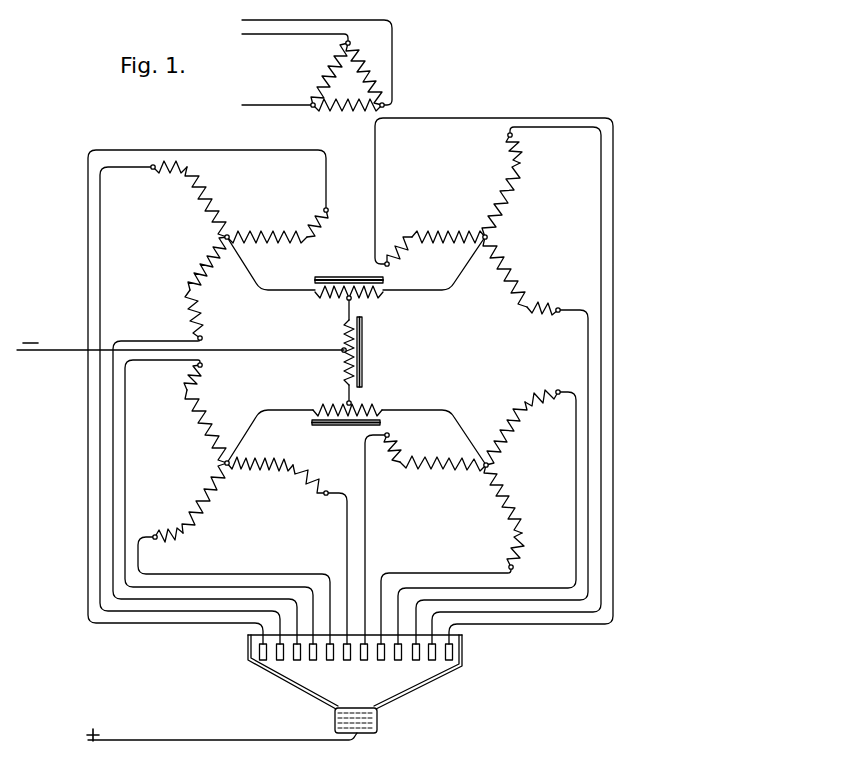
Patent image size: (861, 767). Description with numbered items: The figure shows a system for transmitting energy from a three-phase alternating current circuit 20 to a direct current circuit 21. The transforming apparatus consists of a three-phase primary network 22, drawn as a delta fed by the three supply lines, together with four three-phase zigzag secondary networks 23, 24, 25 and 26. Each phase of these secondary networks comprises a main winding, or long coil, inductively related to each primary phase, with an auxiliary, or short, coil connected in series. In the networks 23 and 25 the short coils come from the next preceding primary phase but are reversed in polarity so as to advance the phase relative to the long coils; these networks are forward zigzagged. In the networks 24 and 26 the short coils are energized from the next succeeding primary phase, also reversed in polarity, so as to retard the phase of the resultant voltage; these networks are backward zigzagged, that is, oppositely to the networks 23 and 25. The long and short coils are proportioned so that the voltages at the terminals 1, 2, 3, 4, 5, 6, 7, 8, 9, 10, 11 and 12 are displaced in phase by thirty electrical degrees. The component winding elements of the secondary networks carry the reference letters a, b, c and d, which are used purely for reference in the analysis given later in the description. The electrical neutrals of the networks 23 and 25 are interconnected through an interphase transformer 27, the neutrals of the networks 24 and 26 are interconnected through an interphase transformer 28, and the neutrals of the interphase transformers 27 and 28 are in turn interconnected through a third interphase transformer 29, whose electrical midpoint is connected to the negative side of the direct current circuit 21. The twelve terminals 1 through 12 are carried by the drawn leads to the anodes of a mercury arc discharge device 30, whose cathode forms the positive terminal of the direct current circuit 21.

The terminal 1 is at (323, 209).
The terminal 2 is at (325, 497).
The terminal 3 is at (560, 307).
The terminal 4 is at (508, 567).
The terminal 5 is at (203, 338).
The terminal 6 is at (155, 535).
The terminal 7 is at (389, 268).
The terminal 8 is at (390, 434).
The terminal 9 is at (152, 170).
The terminal 10 is at (203, 365).
The terminal 11 is at (507, 135).
The terminal 12 is at (558, 396).
The three-phase alternating current circuit 20 is at (273, 23).
The direct current circuit 21 is at (53, 349).
The three-phase primary network 22 is at (347, 76).
The three-phase zigzag secondary network 23 is at (240, 249).
The three-phase zigzag secondary network 24 is at (240, 453).
The three-phase zigzag secondary network 25 is at (470, 225).
The three-phase zigzag secondary network 26 is at (470, 478).
The interphase transformer 27 is at (380, 299).
The interphase transformer 28 is at (375, 405).
The third interphase transformer 29 is at (342, 333).
The mercury arc discharge device 30 is at (465, 647).
The component winding element a is at (214, 197).
The component winding element b is at (318, 238).
The component winding element c is at (196, 427).
The component winding element d is at (183, 375).